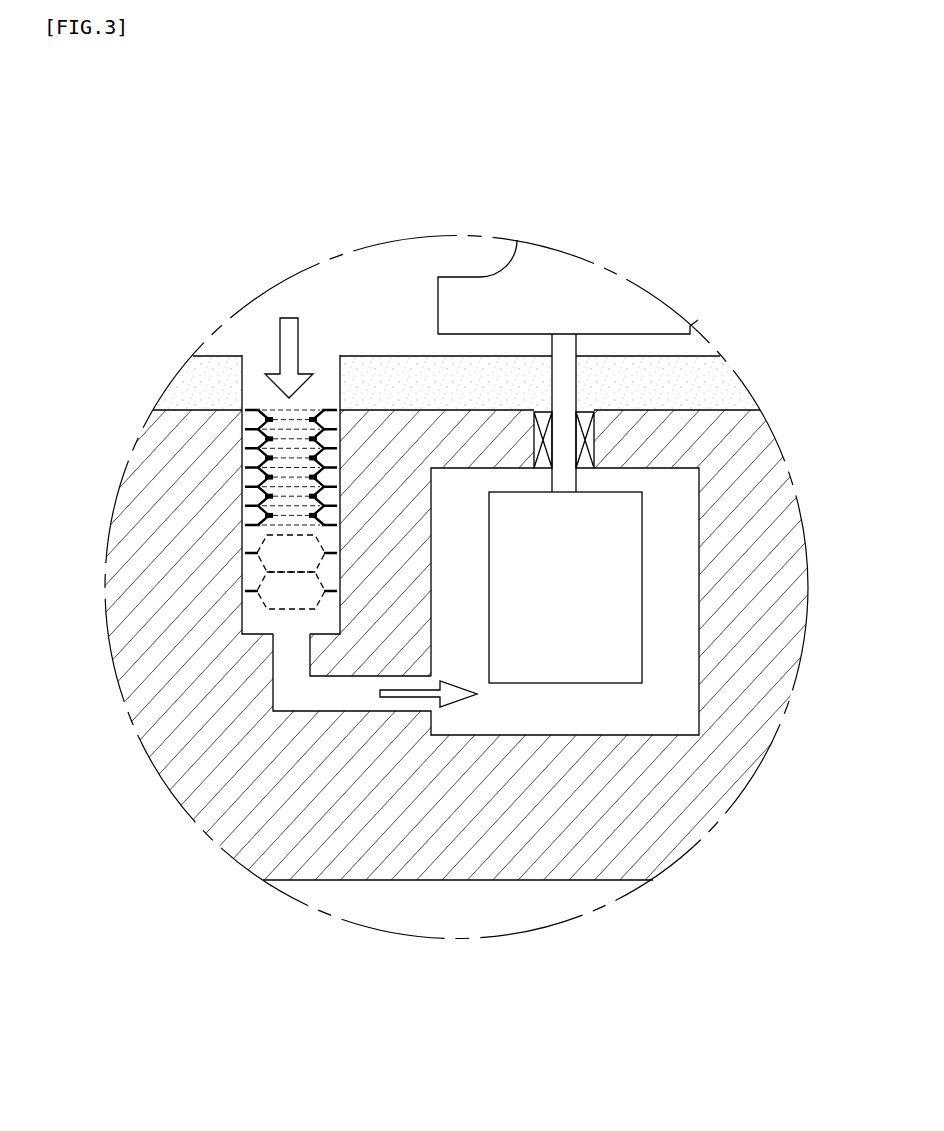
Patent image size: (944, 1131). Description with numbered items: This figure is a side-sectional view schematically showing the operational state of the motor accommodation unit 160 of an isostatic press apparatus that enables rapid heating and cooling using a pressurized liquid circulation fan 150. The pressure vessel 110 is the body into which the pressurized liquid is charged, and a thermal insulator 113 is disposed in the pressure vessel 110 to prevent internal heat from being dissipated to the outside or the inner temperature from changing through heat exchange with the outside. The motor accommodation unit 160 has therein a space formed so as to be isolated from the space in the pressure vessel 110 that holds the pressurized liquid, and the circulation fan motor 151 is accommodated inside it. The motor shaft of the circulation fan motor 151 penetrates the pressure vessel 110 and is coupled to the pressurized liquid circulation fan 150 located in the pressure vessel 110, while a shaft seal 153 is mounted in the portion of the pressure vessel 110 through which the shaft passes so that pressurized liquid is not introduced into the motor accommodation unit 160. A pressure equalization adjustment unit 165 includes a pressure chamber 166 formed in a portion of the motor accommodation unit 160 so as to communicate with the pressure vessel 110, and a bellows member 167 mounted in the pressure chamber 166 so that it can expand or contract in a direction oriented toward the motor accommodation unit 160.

The pressure vessel 110 is at (758, 497).
The thermal insulator 113 is at (206, 376).
The pressurized liquid circulation fan 150 is at (469, 298).
The circulation fan motor 151 is at (630, 588).
The shaft seal 153 is at (600, 440).
The motor accommodation unit 160 is at (623, 738).
The pressure equalization adjustment unit 165 is at (243, 616).
The pressure chamber 166 is at (243, 572).
The bellows member 167 is at (243, 460).